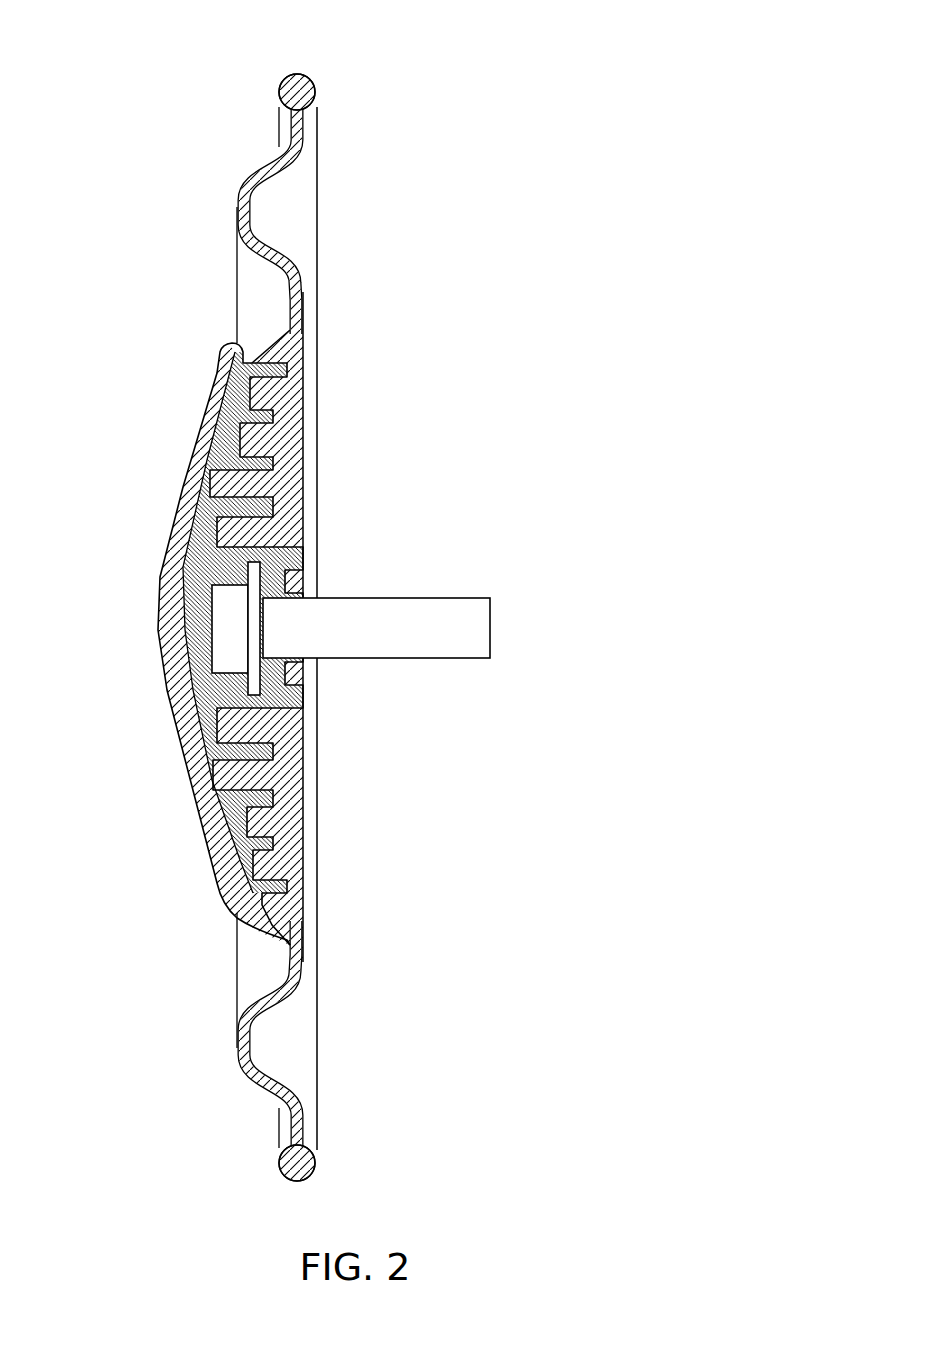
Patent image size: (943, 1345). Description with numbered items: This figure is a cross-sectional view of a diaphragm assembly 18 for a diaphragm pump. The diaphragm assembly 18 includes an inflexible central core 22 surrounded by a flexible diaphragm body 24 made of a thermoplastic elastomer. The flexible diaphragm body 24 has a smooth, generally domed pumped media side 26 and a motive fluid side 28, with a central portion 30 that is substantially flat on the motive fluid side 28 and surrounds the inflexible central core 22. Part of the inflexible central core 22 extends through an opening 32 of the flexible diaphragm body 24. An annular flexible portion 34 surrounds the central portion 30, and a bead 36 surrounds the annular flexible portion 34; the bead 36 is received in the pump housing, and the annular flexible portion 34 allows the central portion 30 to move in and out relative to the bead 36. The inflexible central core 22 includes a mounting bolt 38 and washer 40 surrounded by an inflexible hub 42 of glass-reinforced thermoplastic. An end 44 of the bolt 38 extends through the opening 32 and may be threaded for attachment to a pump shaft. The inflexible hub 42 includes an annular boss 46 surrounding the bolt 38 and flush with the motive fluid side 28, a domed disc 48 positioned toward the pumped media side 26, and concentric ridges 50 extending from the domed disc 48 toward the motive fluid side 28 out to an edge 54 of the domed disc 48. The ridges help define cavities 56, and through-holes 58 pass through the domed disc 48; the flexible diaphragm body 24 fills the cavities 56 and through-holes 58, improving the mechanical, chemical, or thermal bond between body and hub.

The diaphragm assembly 18 is at (766, 86).
The inflexible central core 22 is at (375, 625).
The flexible diaphragm body 24 is at (229, 624).
The pumped media side 26 is at (160, 567).
The motive fluid side 28 is at (305, 628).
The central portion 30 is at (111, 635).
The opening 32 is at (325, 573).
The annular flexible portion 34 is at (195, 213).
The bead 36 is at (300, 93).
The mounting bolt 38 is at (402, 642).
The washer 40 is at (257, 678).
The inflexible hub 42 is at (225, 455).
The end of the bolt 44 is at (487, 674).
The annular boss 46 is at (307, 596).
The domed disc 48 is at (212, 733).
The concentric ridges 50 is at (288, 367).
The edge of the domed disc 54 is at (266, 357).
The cavities 56 is at (285, 392).
The through-holes 58 is at (215, 485).